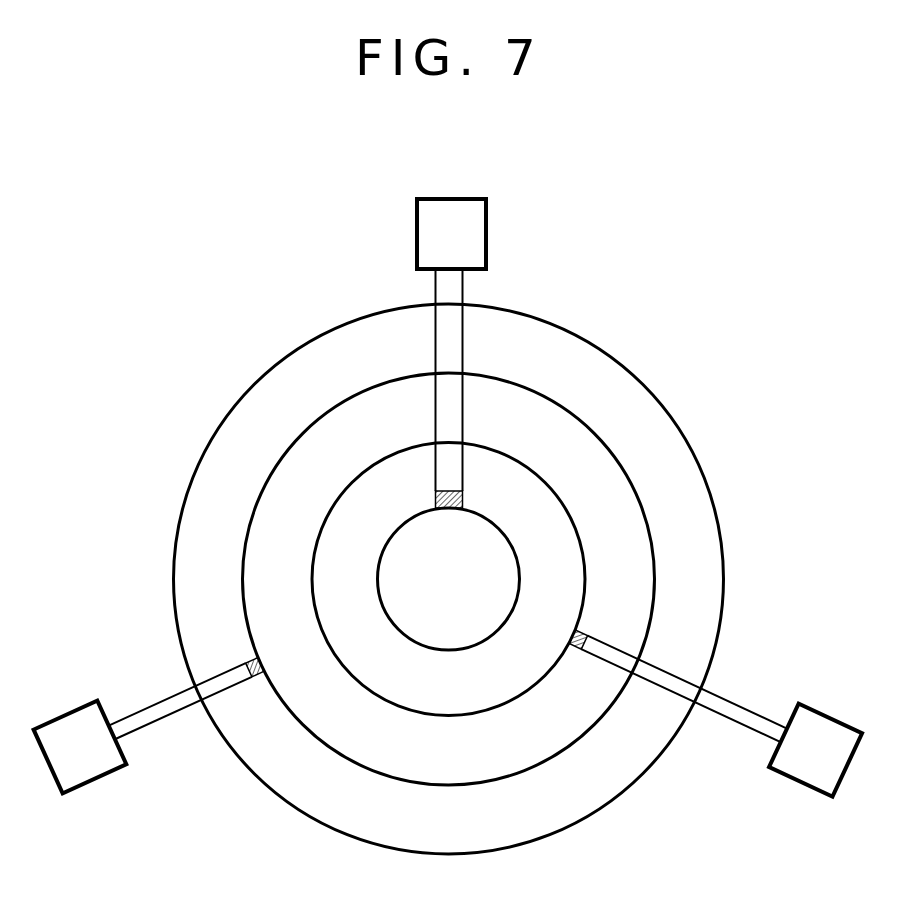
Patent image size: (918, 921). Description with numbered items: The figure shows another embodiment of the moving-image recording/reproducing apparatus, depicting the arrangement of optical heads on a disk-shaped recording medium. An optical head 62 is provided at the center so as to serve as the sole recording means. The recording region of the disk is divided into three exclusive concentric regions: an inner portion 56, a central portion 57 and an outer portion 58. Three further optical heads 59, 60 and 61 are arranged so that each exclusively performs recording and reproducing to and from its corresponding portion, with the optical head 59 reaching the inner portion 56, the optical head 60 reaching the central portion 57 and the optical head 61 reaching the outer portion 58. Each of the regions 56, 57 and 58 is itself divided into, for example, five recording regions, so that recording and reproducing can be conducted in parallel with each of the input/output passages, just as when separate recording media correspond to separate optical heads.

The inner portion 56 is at (522, 495).
The central portion 57 is at (607, 488).
The outer portion 58 is at (690, 535).
The optical head 59 is at (435, 502).
The optical head 60 is at (576, 634).
The optical head 61 is at (258, 677).
The optical head 62 is at (465, 628).